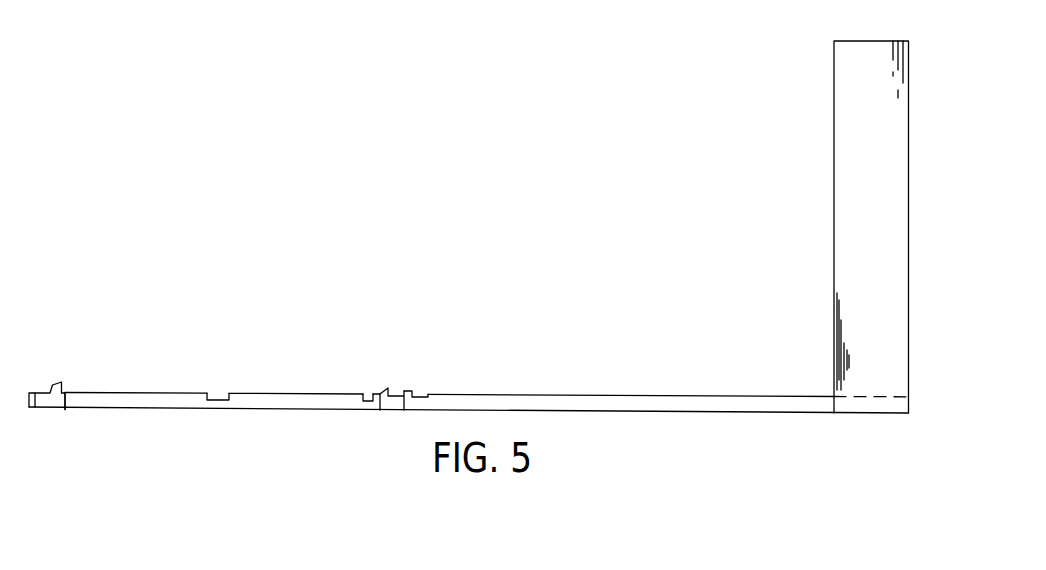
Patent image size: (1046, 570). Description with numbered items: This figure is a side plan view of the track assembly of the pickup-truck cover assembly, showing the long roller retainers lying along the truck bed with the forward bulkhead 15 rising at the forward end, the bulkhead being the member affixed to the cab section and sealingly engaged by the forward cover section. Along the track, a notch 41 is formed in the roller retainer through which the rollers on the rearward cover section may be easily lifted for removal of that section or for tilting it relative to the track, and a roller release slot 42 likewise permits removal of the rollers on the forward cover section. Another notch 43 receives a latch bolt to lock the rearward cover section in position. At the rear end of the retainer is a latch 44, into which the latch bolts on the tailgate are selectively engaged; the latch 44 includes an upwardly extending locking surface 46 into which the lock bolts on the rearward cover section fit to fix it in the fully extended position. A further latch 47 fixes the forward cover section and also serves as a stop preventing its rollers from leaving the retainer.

The forward bulkhead 15 is at (800, 122).
The notch 41 is at (222, 395).
The roller release slot 42 is at (418, 397).
The notch 43 is at (370, 397).
The latch 44 is at (51, 400).
The locking surface 46 is at (32, 393).
The latch 47 is at (391, 407).